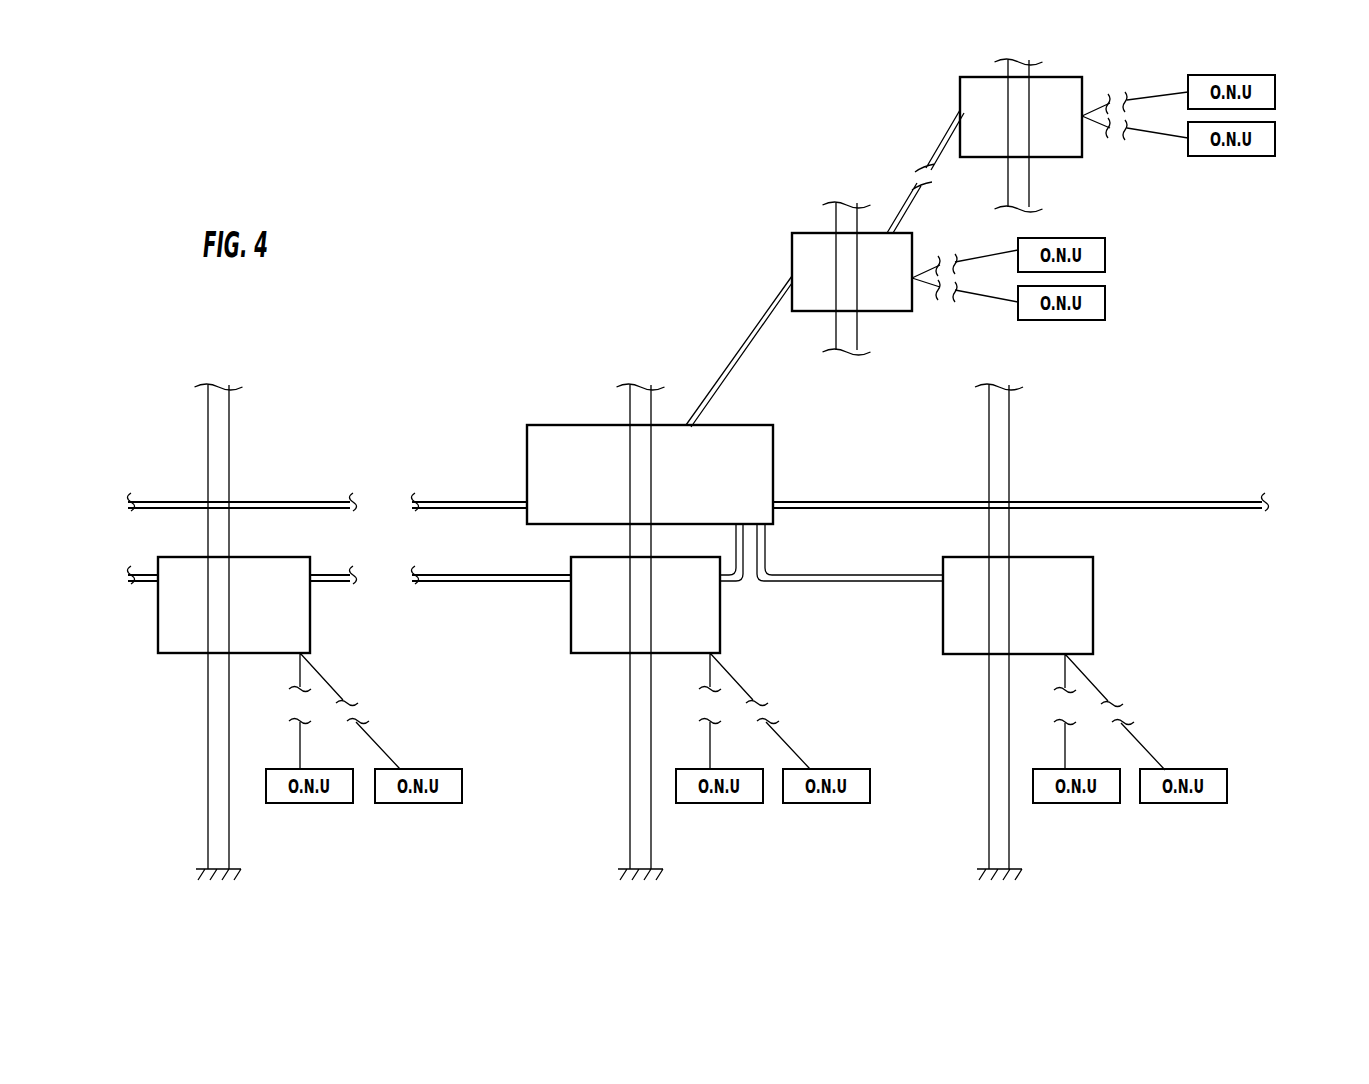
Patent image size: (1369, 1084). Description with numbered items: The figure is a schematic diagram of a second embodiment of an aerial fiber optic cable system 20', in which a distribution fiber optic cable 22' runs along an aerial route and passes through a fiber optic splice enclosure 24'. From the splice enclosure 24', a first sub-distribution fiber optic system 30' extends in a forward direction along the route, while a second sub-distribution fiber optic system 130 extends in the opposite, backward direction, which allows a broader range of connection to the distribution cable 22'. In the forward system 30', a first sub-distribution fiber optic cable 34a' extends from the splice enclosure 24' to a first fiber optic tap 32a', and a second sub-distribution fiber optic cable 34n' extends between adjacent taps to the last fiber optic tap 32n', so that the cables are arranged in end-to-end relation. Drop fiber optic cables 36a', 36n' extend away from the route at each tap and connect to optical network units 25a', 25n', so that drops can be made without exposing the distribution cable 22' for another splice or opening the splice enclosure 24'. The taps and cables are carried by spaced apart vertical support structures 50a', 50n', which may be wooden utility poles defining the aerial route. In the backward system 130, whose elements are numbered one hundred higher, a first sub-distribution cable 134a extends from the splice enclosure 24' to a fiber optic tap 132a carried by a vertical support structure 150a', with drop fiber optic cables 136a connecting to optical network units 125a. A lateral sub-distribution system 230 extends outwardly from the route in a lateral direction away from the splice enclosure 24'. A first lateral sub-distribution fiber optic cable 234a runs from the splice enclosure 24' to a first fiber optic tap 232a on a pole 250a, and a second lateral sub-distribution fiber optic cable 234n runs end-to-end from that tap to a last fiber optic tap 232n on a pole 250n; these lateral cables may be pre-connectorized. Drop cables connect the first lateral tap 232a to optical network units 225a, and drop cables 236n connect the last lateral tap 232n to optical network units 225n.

The aerial fiber optic cable system 20' is at (460, 258).
The first sub-distribution fiber optic system 30' is at (487, 461).
The lateral sub-distribution system 230 is at (775, 156).
The fiber optic splice enclosure 24' is at (668, 449).
The distribution fiber optic cable 22' is at (698, 481).
The second sub-distribution fiber optic system 130 is at (905, 538).
The fiber optic tap 32n' is at (269, 605).
The second sub-distribution fiber optic cable 34n' is at (279, 595).
The drop fiber optic cables 36n' is at (366, 711).
The optical network units 25n' is at (364, 807).
The vertical support structure 50n' is at (200, 632).
The fiber optic tap 32a' is at (687, 605).
The first sub-distribution fiber optic cable 34a' is at (604, 565).
The drop fiber optic cables 36a' is at (774, 711).
The optical network units 25a' is at (773, 810).
The vertical support structure 50a' is at (622, 632).
The fiber optic tap 132a is at (1093, 628).
The first sub-distribution fiber optic cable 134a is at (855, 584).
The drop fiber optic cables 136a is at (1098, 700).
The optical network units 125a is at (1168, 803).
The vertical support structure 150a' is at (978, 632).
The first fiber optic tap 232a is at (792, 243).
The first lateral sub-distribution fiber optic cable 234a is at (737, 352).
The pole 250a is at (857, 327).
The optical network units 225a is at (1105, 258).
The fiber optic tap 232n is at (966, 77).
The second lateral sub-distribution fiber optic cable 234n is at (933, 150).
The pole 250n is at (1029, 175).
The optical network units 225n is at (1276, 136).
The drop cables 236n is at (1137, 128).